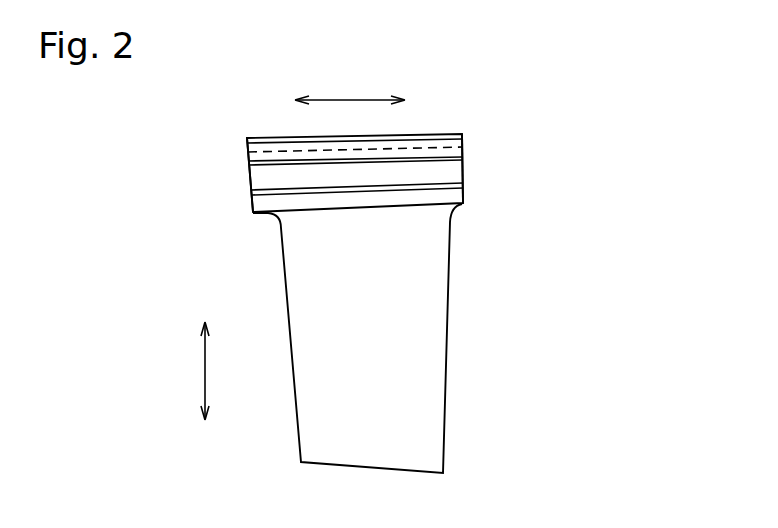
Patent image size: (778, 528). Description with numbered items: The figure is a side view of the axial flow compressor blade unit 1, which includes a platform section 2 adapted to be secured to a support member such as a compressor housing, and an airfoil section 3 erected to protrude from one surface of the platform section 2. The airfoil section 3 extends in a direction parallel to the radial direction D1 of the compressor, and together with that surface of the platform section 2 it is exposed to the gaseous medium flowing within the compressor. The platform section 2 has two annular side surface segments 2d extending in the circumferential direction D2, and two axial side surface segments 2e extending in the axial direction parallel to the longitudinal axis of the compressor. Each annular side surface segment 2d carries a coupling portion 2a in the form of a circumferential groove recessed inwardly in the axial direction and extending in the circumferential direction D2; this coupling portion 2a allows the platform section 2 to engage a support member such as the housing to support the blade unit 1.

The axial flow compressor blade unit 1 is at (556, 299).
The platform section 2 is at (378, 175).
The coupling portion 2a is at (290, 177).
The annular side surface segment 2d is at (457, 198).
The axial side surface segment 2e is at (464, 145).
The airfoil section 3 is at (427, 370).
The radial direction D1 is at (205, 368).
The circumferential direction D2 is at (350, 98).